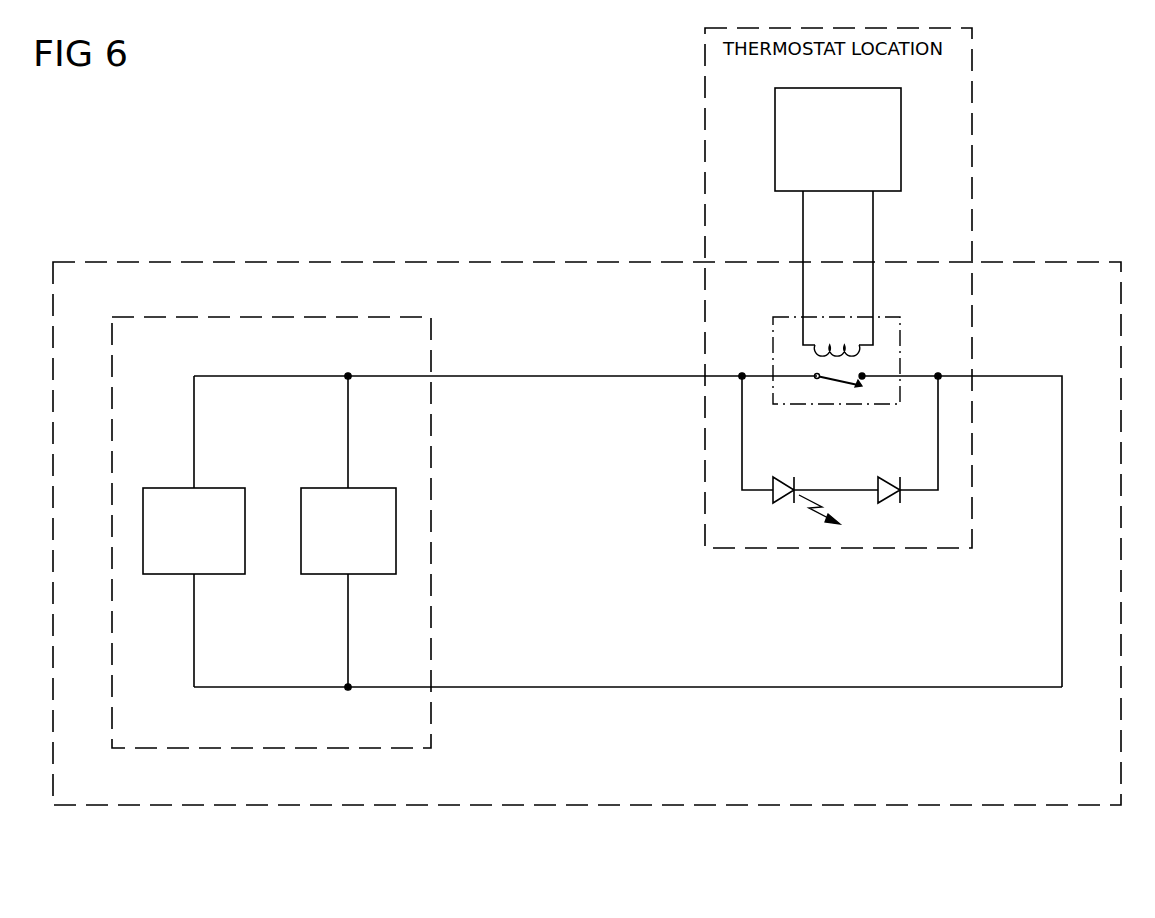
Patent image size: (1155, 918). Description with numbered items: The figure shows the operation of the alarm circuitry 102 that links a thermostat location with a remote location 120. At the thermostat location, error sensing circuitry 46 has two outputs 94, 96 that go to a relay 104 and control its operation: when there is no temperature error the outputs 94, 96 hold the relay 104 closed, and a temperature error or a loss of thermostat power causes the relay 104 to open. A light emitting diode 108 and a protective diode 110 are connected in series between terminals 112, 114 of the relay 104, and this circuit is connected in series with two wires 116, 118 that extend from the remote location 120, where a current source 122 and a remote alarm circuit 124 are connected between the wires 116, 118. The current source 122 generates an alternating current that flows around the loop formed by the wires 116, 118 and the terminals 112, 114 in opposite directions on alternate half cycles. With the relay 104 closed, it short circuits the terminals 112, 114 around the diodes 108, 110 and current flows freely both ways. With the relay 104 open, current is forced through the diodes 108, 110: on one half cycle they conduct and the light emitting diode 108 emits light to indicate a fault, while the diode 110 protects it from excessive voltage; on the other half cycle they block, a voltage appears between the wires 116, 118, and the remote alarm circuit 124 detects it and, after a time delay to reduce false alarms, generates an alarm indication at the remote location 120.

The error sensing circuitry 46 is at (903, 137).
The output 94 is at (803, 213).
The output 96 is at (873, 213).
The alarm circuitry 102 is at (660, 807).
The relay 104 is at (900, 317).
The light emitting diode 108 is at (800, 482).
The diode 110 is at (903, 482).
The terminal 112 is at (742, 373).
The terminal 114 is at (938, 373).
The wire 116 is at (612, 376).
The wire 118 is at (627, 687).
The remote location 120 is at (352, 752).
The current source 122 is at (223, 487).
The remote alarm circuit 124 is at (372, 487).